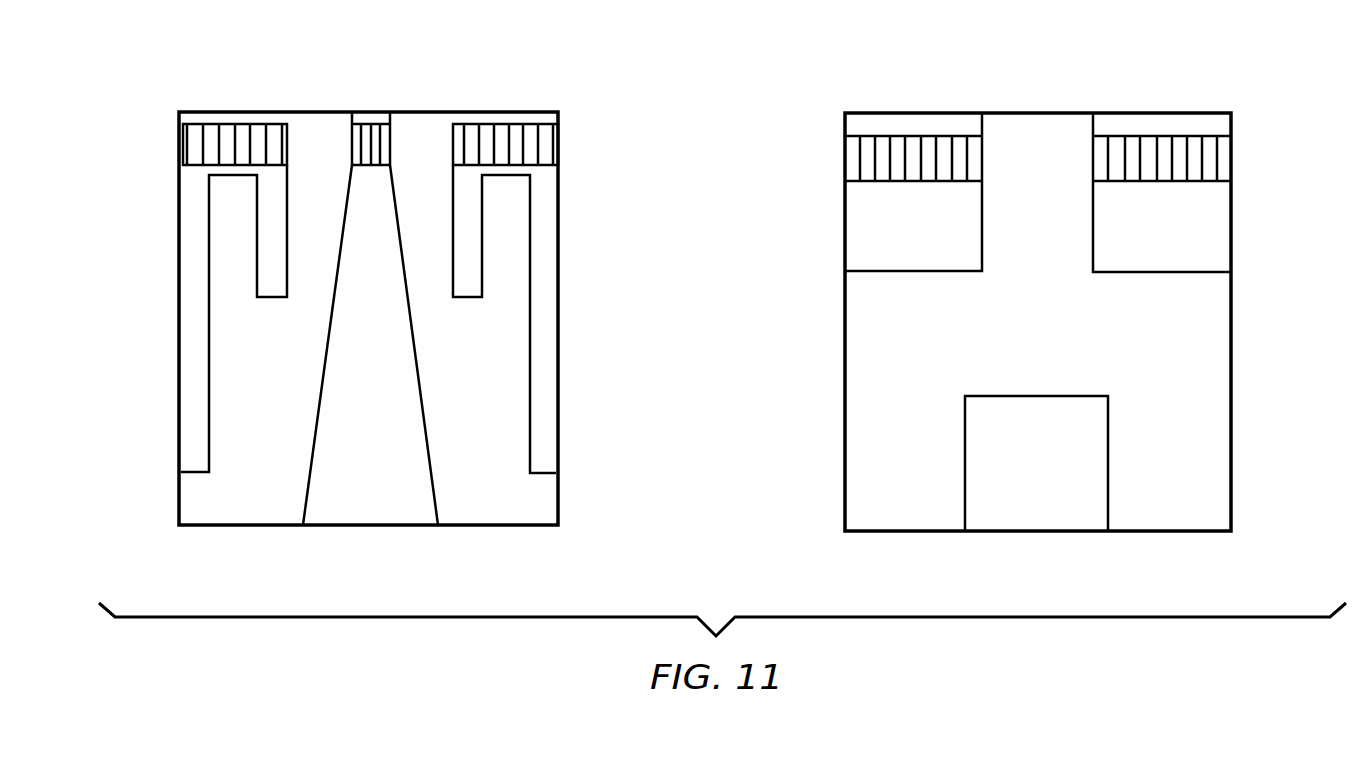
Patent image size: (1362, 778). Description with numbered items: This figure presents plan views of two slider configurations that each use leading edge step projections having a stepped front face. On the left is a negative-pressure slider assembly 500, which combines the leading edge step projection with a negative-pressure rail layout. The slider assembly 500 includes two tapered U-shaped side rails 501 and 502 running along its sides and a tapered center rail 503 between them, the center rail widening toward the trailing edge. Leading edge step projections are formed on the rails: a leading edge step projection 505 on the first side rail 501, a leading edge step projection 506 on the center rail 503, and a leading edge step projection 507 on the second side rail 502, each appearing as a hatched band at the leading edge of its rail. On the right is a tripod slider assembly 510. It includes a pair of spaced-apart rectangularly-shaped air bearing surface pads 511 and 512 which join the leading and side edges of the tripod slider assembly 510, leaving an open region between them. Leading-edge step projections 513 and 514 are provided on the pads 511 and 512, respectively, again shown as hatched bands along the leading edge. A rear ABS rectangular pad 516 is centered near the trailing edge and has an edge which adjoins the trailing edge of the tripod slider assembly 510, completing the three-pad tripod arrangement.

The slider assembly 500 is at (560, 87).
The tapered U-shaped side rail 501 is at (200, 430).
The tapered U-shaped side rail 502 is at (540, 441).
The tapered center rail 503 is at (380, 513).
The leading edge step projection 505 is at (190, 140).
The leading edge step projection 506 is at (378, 143).
The leading edge step projection 507 is at (550, 145).
The tripod slider assembly 510 is at (1207, 94).
The air bearing surface pad 511 is at (873, 237).
The air bearing surface pad 512 is at (1215, 238).
The leading-edge step projection 513 is at (857, 147).
The leading-edge step projection 514 is at (1222, 148).
The rear ABS rectangular pad 516 is at (1047, 515).